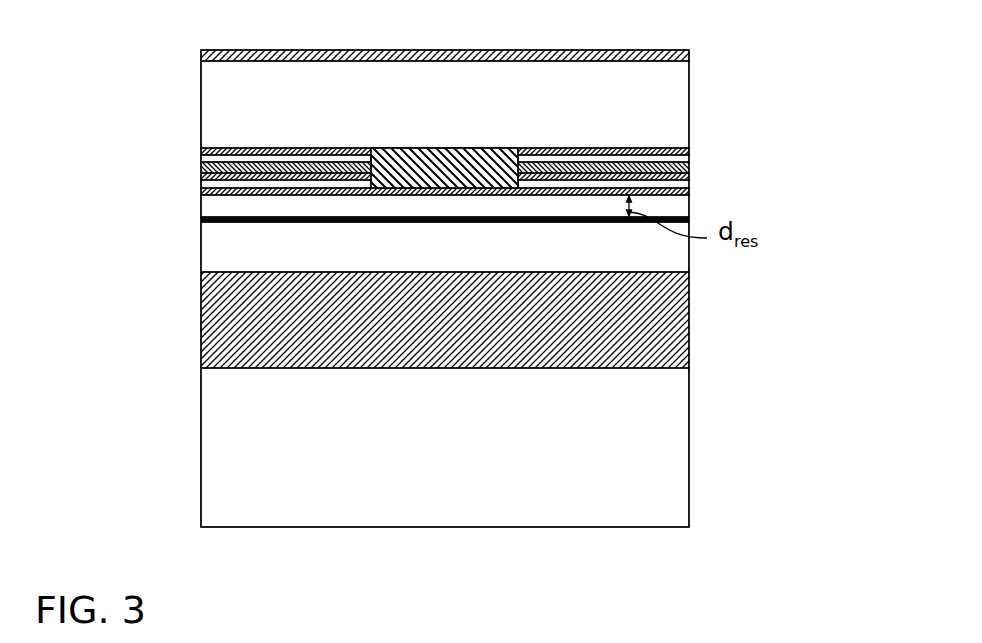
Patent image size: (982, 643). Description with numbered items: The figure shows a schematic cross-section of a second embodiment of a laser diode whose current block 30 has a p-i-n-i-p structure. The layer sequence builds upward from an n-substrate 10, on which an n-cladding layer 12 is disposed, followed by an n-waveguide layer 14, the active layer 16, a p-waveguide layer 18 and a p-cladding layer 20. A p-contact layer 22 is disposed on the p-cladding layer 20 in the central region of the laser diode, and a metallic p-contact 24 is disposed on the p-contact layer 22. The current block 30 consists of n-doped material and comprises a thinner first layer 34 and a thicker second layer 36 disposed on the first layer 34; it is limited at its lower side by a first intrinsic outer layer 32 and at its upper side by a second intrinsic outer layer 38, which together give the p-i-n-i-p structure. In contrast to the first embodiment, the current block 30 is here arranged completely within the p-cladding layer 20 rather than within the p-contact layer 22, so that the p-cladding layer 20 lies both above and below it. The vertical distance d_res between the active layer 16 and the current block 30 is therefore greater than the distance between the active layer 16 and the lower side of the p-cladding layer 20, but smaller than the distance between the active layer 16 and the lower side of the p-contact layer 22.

The n-substrate 10 is at (668, 470).
The n-cladding layer 12 is at (650, 326).
The n-waveguide layer 14 is at (670, 263).
The active layer 16 is at (201, 220).
The p-waveguide layer 18 is at (210, 203).
The p-cladding layer 20 is at (212, 151).
The p-contact layer 22 is at (247, 93).
The p-contact 24 is at (201, 55).
The current block 30 is at (519, 170).
The first intrinsic outer layer 32 is at (489, 204).
The first layer 34 is at (672, 177).
The second layer 36 is at (675, 171).
The second intrinsic outer layer 38 is at (673, 158).